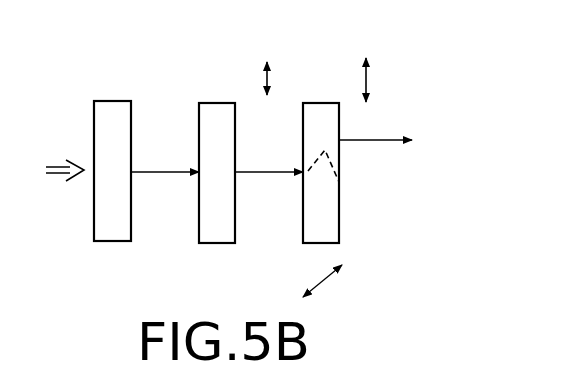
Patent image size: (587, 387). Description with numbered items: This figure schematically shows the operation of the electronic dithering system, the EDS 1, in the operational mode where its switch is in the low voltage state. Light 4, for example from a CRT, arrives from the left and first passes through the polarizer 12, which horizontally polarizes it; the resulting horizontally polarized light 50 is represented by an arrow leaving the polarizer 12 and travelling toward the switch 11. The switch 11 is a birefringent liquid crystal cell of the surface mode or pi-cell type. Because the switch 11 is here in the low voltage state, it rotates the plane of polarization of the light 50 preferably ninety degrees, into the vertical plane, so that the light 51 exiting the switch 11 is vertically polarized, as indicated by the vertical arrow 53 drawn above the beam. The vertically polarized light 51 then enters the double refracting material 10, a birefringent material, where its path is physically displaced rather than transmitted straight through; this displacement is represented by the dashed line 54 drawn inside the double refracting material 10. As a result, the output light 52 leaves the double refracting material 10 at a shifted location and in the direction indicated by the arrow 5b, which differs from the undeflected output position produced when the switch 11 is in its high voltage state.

The electronic dithering system 1 is at (380, 62).
The light 4 is at (56, 162).
The arrow 5b is at (392, 140).
The double refracting material 10 is at (317, 103).
The switch 11 is at (221, 103).
The polarizer 12 is at (119, 101).
The light 50 is at (158, 172).
The light 51 is at (273, 172).
The output light 52 is at (373, 140).
The vertical arrow 53 is at (267, 83).
The dashed line 54 is at (339, 182).